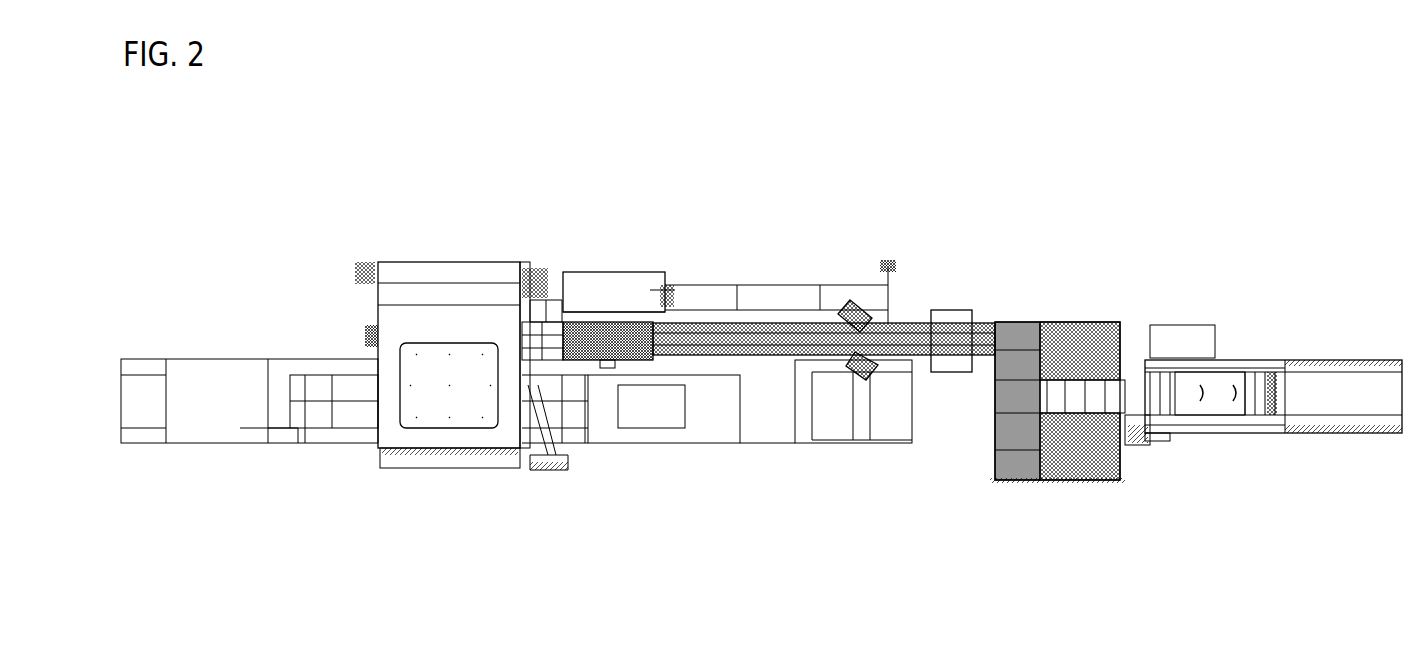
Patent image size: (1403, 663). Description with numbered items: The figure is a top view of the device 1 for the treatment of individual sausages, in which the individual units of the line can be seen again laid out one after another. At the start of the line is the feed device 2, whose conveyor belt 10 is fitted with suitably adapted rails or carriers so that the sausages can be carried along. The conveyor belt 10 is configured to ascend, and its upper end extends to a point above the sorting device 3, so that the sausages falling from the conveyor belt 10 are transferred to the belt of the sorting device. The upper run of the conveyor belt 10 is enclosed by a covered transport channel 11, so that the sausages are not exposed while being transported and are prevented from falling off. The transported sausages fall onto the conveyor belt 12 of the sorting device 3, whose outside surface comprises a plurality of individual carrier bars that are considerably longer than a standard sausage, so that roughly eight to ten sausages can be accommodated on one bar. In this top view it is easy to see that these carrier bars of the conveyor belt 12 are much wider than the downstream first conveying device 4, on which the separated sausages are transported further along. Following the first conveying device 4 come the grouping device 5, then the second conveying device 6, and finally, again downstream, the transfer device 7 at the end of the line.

The device 1 is at (688, 178).
The feed device 2 is at (1252, 310).
The sorting device 3 is at (1090, 508).
The first conveying device 4 is at (953, 295).
The grouping device 5 is at (626, 388).
The second conveying device 6 is at (542, 370).
The transfer device 7 is at (452, 212).
The conveyor belt 10 is at (1132, 435).
The covered transport channel 11 is at (1110, 390).
The conveyor belt 12 is at (1035, 440).